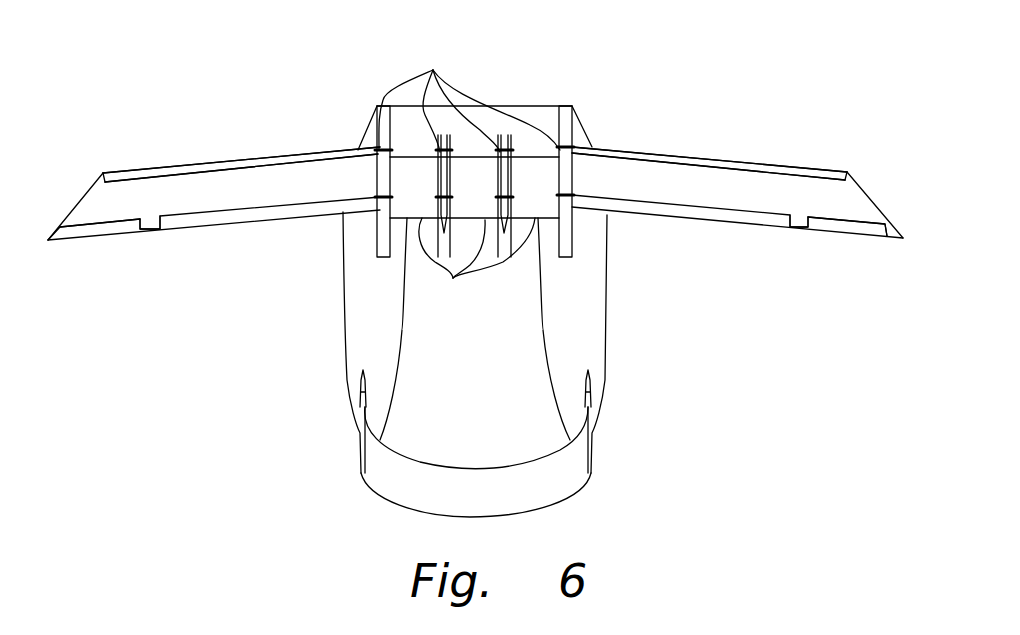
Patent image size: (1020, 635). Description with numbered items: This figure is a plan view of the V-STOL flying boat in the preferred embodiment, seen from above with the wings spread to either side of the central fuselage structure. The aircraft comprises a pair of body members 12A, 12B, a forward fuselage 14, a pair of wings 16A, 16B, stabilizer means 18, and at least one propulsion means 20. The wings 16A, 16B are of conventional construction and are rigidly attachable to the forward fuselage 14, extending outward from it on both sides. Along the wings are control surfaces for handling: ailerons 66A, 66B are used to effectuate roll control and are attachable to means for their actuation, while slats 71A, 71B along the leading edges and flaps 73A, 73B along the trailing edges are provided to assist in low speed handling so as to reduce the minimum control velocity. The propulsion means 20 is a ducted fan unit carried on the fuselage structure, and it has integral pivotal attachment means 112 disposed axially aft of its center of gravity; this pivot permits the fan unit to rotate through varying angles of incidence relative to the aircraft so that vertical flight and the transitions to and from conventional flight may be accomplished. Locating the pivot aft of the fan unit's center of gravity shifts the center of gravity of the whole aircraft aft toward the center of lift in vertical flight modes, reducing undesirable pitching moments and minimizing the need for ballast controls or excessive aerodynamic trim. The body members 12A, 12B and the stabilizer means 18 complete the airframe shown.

The body member 12A is at (603, 377).
The body member 12B is at (348, 392).
The forward fuselage 14 is at (510, 107).
The wing 16A is at (690, 178).
The wing 16B is at (267, 188).
The stabilizer means 18 is at (377, 490).
The propulsion means 20 is at (453, 278).
The aileron 66A is at (818, 233).
The aileron 66B is at (103, 240).
The slat 71A is at (783, 165).
The slat 71B is at (183, 163).
The flap 73A is at (693, 220).
The flap 73B is at (223, 228).
The pivotal attachment means 112 is at (433, 70).